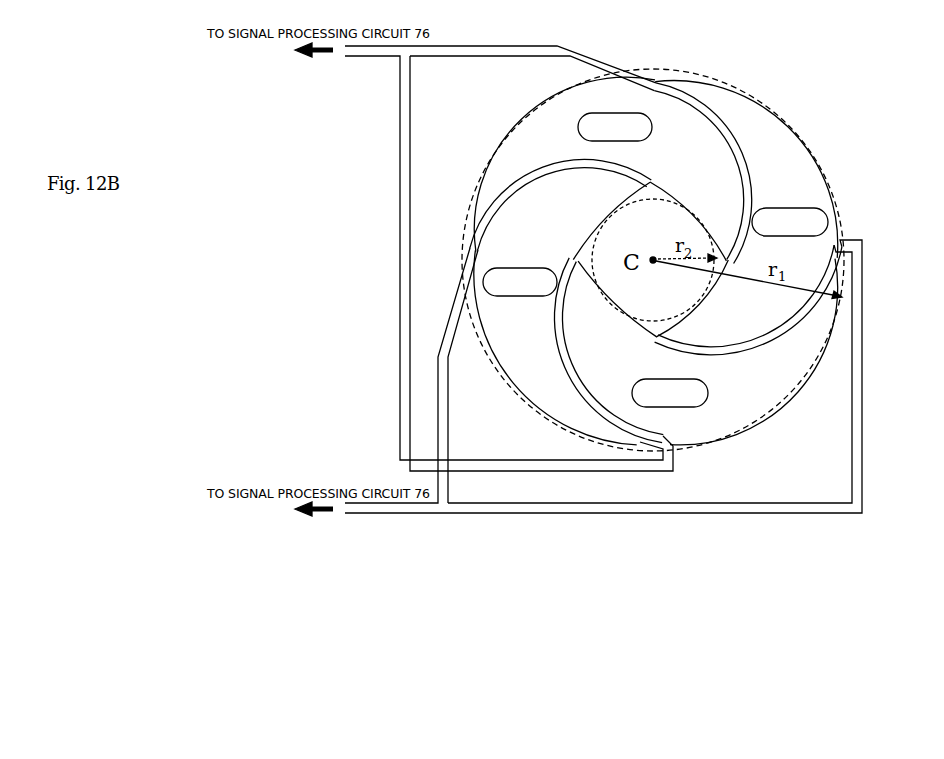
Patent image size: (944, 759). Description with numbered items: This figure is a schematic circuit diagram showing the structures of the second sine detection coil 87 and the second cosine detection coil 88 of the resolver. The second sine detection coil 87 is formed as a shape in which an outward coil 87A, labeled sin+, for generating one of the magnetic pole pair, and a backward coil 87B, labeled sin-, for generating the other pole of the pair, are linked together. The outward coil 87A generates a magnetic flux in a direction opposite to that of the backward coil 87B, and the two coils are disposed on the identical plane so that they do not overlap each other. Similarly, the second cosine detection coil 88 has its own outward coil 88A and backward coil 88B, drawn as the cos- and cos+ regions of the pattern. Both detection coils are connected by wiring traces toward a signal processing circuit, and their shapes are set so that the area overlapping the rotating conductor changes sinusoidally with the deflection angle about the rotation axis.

The second sine detection coil 87 is at (726, 527).
The outward coil 87A is at (505, 137).
The backward coil 87B is at (756, 424).
The second cosine detection coil 88 is at (389, 307).
The outward coil 88A is at (548, 420).
The backward coil 88B is at (789, 121).